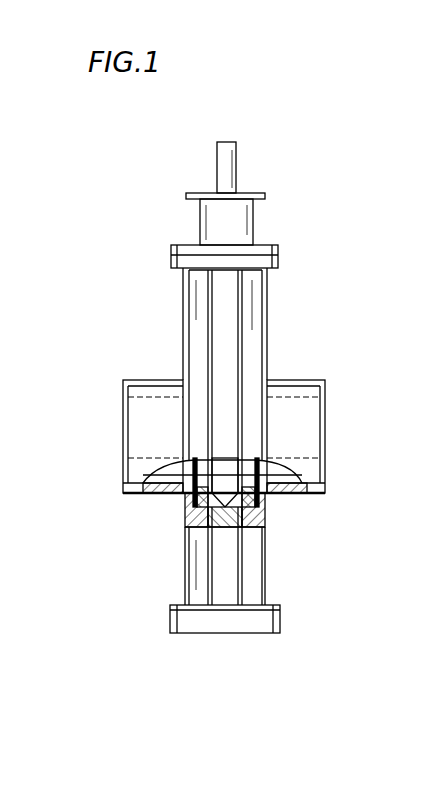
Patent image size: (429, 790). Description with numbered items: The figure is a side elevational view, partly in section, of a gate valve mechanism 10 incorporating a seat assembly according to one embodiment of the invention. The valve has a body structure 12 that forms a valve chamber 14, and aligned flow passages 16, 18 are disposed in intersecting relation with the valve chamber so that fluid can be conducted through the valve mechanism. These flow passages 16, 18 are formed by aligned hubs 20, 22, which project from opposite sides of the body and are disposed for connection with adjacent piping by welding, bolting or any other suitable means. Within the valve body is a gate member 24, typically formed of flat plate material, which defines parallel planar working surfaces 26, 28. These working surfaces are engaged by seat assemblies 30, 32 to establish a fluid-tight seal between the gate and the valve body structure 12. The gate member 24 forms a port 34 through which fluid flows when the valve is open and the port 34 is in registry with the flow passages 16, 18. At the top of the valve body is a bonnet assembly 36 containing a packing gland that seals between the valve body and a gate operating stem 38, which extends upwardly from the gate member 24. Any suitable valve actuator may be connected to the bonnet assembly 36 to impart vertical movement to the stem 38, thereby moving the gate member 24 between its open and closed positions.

The gate valve mechanism 10 is at (329, 205).
The body structure 12 is at (183, 585).
The valve chamber 14 is at (207, 462).
The flow passage 16 is at (147, 477).
The flow passage 18 is at (293, 473).
The hub 20 is at (145, 381).
The hub 22 is at (307, 380).
The gate member 24 is at (226, 512).
The planar working surface 26 is at (189, 528).
The planar working surface 28 is at (264, 526).
The seat assembly 30 is at (187, 500).
The seat assembly 32 is at (263, 499).
The port 34 is at (230, 465).
The bonnet assembly 36 is at (200, 215).
The gate operating stem 38 is at (231, 162).